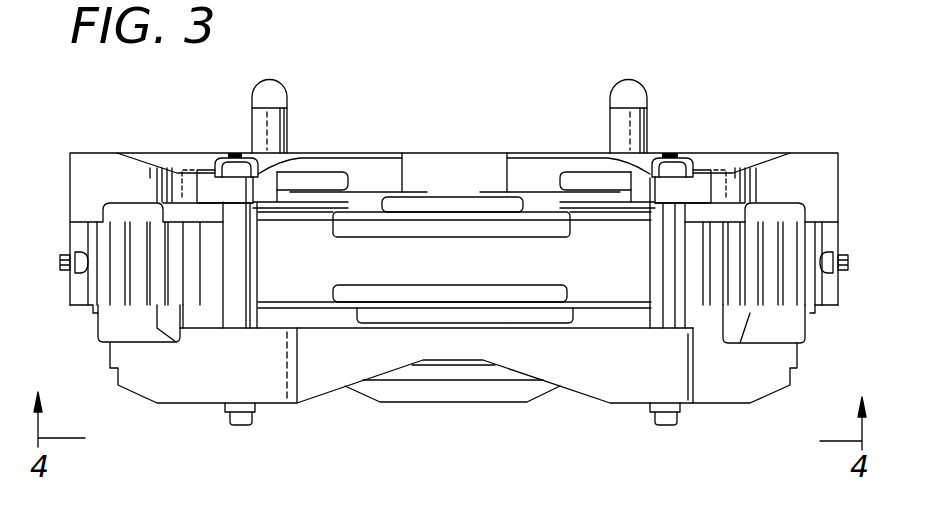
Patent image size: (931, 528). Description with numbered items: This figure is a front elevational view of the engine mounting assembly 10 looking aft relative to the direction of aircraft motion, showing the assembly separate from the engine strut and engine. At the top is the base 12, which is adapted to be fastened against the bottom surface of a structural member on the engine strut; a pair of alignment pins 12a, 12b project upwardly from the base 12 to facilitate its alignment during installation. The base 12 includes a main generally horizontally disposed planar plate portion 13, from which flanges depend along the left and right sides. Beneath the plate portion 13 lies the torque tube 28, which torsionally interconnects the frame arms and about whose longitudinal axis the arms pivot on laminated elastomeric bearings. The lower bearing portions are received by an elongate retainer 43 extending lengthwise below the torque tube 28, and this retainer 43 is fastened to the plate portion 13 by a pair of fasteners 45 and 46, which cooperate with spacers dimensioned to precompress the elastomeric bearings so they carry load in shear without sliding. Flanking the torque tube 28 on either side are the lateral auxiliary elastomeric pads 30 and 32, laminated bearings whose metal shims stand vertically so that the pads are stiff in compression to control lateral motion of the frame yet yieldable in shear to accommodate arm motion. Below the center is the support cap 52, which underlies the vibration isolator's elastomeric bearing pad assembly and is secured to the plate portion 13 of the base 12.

The engine mounting assembly 10 is at (484, 103).
The base 12 is at (748, 157).
The alignment pin 12a is at (272, 125).
The alignment pin 12b is at (643, 120).
The plate portion 13 is at (548, 153).
The torque tube 28 is at (520, 266).
The lateral auxiliary elastomeric pad 30 is at (772, 293).
The lateral auxiliary elastomeric pad 32 is at (135, 293).
The retainer 43 is at (348, 362).
The fastener 45 is at (235, 293).
The fastener 46 is at (663, 303).
The support cap 52 is at (445, 402).